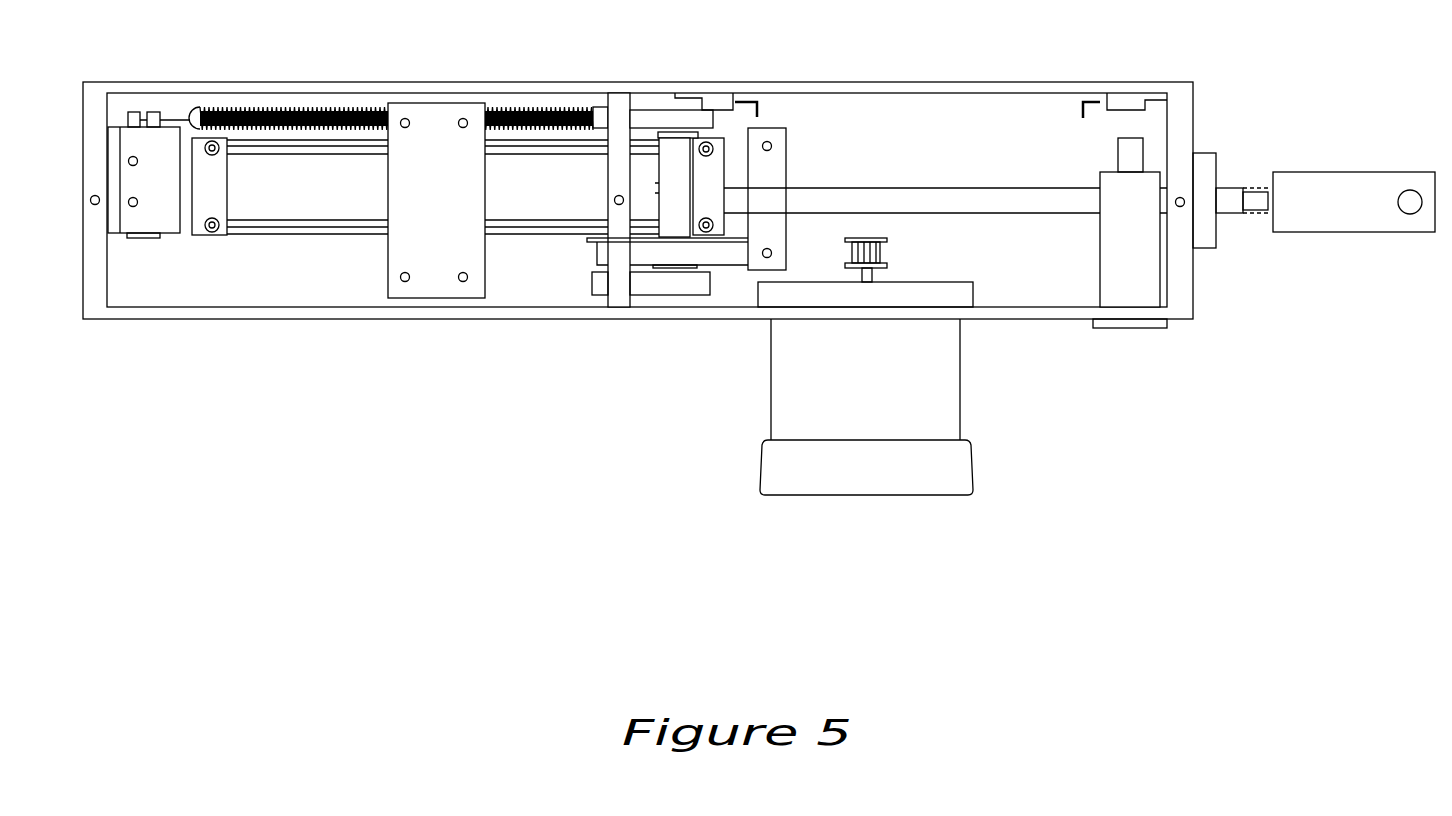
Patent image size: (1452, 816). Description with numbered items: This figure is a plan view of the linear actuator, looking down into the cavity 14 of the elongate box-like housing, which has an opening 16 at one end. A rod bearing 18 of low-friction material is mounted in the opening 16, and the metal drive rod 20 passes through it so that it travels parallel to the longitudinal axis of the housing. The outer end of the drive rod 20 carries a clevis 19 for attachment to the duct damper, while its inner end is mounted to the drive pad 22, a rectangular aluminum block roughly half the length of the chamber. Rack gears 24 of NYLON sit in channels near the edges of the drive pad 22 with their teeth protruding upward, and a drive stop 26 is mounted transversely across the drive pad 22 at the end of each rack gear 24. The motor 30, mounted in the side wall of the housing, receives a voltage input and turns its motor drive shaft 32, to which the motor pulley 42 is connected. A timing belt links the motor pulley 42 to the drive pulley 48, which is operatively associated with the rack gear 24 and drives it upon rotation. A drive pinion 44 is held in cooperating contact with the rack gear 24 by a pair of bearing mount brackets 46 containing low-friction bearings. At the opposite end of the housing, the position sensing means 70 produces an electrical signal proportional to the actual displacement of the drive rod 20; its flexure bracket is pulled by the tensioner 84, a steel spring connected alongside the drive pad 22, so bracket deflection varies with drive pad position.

The cavity 14 is at (270, 291).
The opening 16 is at (1167, 185).
The rod bearing 18 is at (1205, 235).
The clevis 19 is at (1365, 188).
The drive rod 20 is at (992, 197).
The drive pad 22 is at (328, 185).
The rack gear 24 is at (262, 224).
The drive stop 26 is at (202, 205).
The motor 30 is at (777, 479).
The motor drive shaft 32 is at (873, 273).
The motor pulley 42 is at (878, 257).
The drive pinion 44 is at (677, 157).
The bearing mount brackets 46 is at (600, 118).
The drive pulley 48 is at (725, 252).
The position sensing means 70 is at (133, 258).
The tensioner 84 is at (238, 112).